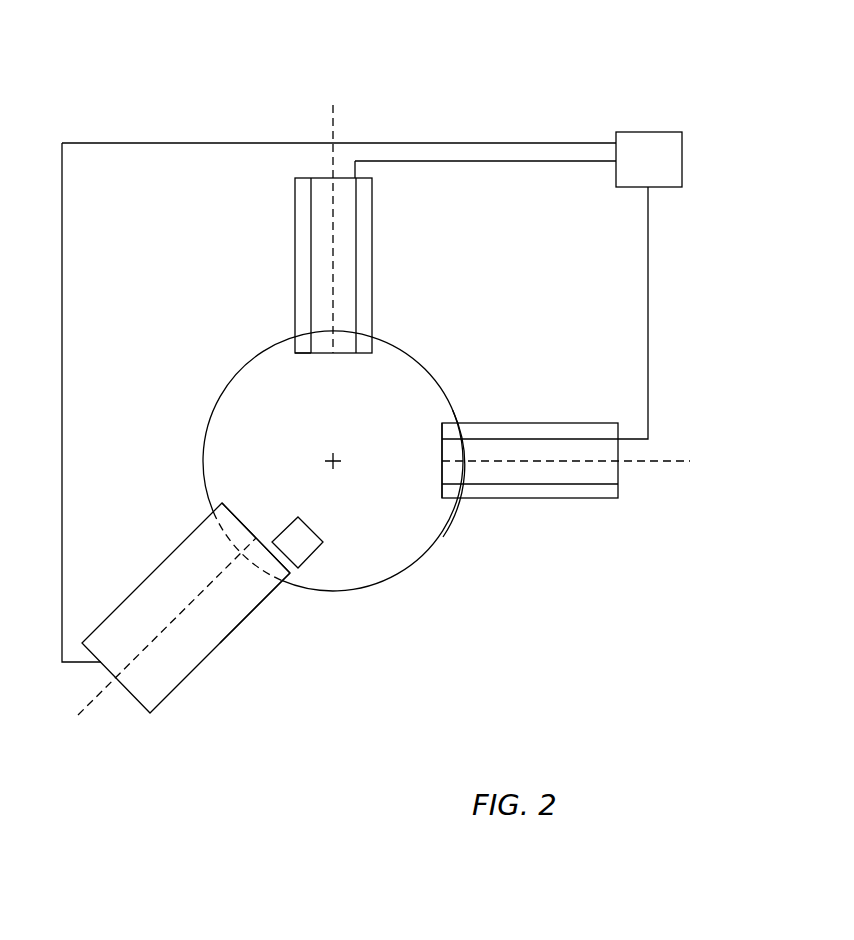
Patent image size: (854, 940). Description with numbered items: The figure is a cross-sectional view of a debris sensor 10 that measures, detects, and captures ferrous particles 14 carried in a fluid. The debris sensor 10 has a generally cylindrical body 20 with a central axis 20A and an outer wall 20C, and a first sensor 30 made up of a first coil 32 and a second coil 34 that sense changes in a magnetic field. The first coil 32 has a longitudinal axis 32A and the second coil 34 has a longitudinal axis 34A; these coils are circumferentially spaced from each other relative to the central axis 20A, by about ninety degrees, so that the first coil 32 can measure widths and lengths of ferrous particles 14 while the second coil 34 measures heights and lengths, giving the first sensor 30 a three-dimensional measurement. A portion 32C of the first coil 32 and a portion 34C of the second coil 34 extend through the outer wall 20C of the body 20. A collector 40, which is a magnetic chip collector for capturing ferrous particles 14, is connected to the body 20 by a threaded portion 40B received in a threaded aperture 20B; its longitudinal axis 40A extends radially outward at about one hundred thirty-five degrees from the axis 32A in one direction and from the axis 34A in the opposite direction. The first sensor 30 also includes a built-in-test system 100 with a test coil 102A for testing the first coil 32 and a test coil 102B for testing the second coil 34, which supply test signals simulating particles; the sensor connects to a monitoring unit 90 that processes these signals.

The debris sensor 10 is at (157, 78).
The first sensor 30 is at (496, 113).
The monitoring unit 90 is at (665, 132).
The second coil 34 is at (330, 243).
The longitudinal axis of second coil 34A is at (338, 122).
The portion of second coil 34C is at (290, 344).
The built-in-test (BIT) system 100 is at (292, 293).
The test coil 102B is at (304, 262).
The body 20 is at (360, 473).
The central axis 20A is at (330, 466).
The aperture 20B is at (222, 503).
The outer wall 20C is at (443, 537).
The ferrous particles 14 is at (320, 530).
The first coil 32 is at (556, 462).
The longitudinal axis of first coil 32A is at (666, 466).
The portion of first coil 32C is at (443, 500).
The test coil 102A is at (542, 430).
The collector 40 is at (222, 598).
The longitudinal axis of collector 40A is at (90, 713).
The threaded portion 40B is at (288, 593).